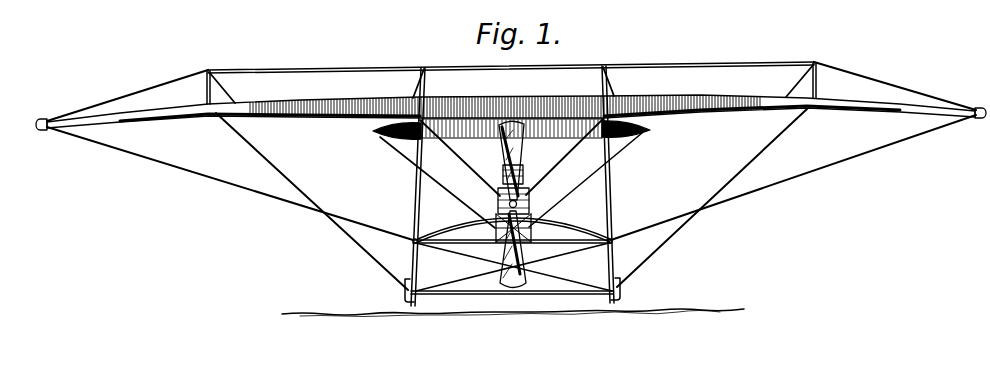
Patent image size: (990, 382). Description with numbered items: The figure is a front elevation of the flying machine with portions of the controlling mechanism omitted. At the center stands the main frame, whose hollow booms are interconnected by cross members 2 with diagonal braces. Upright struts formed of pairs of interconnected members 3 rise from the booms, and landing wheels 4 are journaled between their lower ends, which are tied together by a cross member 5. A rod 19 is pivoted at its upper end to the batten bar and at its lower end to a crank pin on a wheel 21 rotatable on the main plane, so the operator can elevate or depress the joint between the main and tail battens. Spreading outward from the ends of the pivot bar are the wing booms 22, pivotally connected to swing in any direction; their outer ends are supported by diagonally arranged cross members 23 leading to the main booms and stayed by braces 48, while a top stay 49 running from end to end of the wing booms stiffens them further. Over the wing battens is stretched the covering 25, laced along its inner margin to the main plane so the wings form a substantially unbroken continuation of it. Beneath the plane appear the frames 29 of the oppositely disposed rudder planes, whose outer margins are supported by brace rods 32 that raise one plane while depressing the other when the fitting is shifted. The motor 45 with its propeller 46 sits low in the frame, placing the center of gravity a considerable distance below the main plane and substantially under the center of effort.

The cross member 2 is at (448, 242).
The upright strut member 3 is at (409, 200).
The landing wheel 4 is at (407, 296).
The cross member 5 is at (533, 292).
The rod 19 is at (562, 178).
The wheel 21 is at (552, 222).
The wing boom 22 is at (100, 116).
The diagonally arranged cross member 23 is at (227, 191).
The wing covering 25 is at (288, 106).
The rudder plane frame 29 is at (372, 131).
The brace rod 32 is at (396, 152).
The motor 45 is at (523, 174).
The propeller 46 is at (504, 152).
The brace 48 is at (304, 189).
The top stay 49 is at (369, 68).